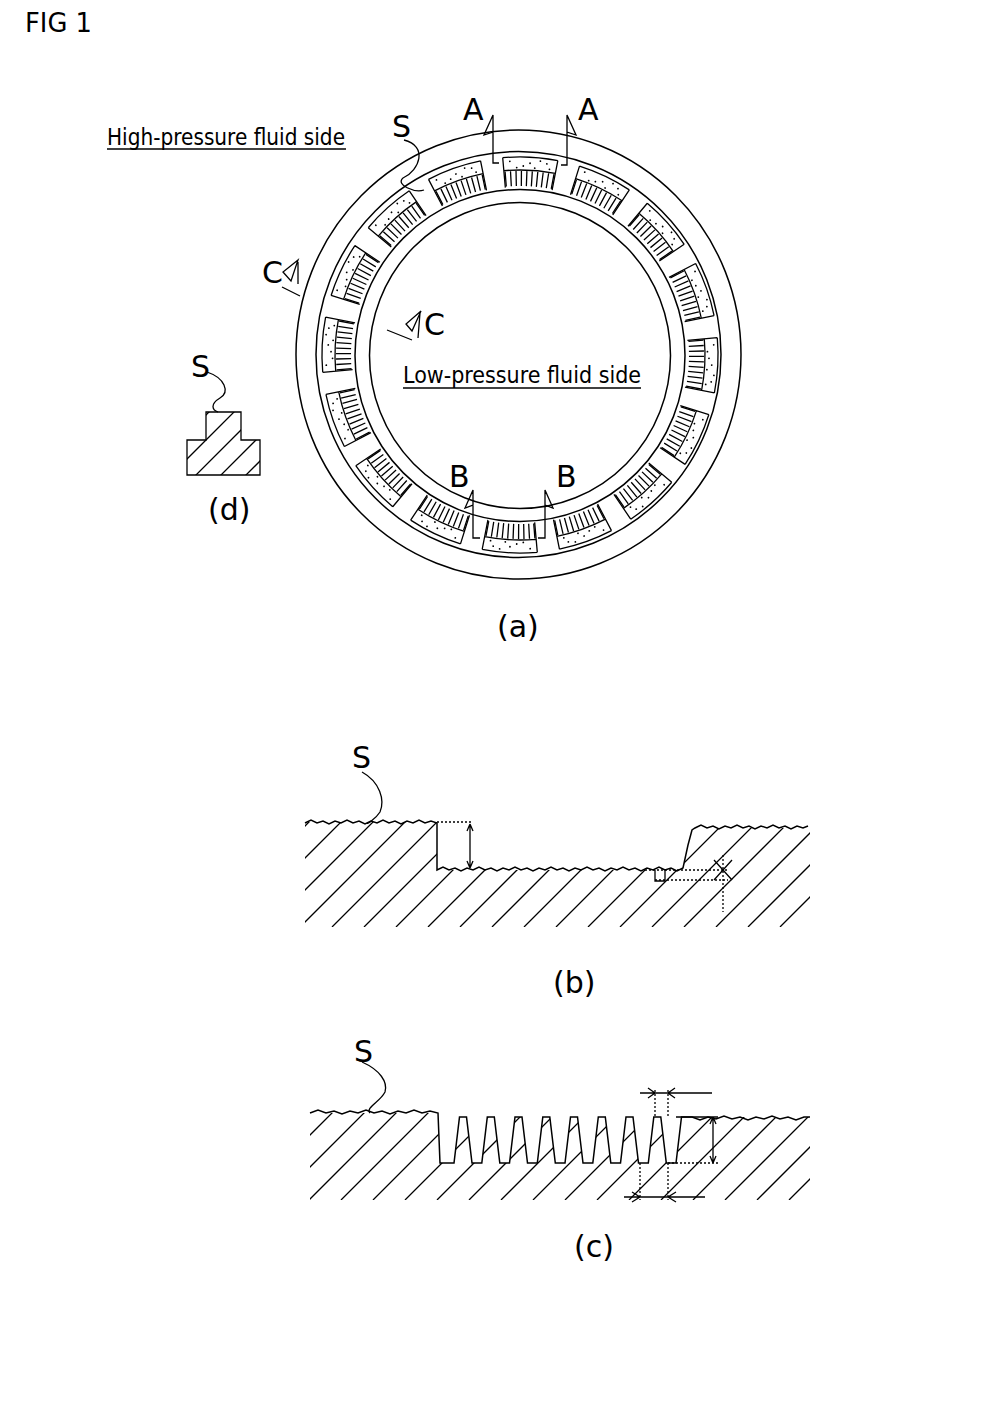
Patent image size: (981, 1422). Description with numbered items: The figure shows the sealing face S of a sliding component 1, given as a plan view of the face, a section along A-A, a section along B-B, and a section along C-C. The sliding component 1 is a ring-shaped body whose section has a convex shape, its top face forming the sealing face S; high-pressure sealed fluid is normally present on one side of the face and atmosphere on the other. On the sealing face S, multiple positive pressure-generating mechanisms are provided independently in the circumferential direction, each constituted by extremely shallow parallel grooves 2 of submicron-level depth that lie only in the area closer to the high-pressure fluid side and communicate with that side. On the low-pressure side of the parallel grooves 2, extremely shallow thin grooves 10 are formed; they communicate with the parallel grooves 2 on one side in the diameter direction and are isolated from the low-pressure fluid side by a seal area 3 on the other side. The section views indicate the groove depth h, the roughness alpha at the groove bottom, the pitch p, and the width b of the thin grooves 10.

The sliding component 1 is at (638, 168).
The extremely shallow parallel grooves 2 is at (710, 283).
The seal area 3 is at (527, 189).
The extremely shallow thin grooves 10 is at (598, 1097).